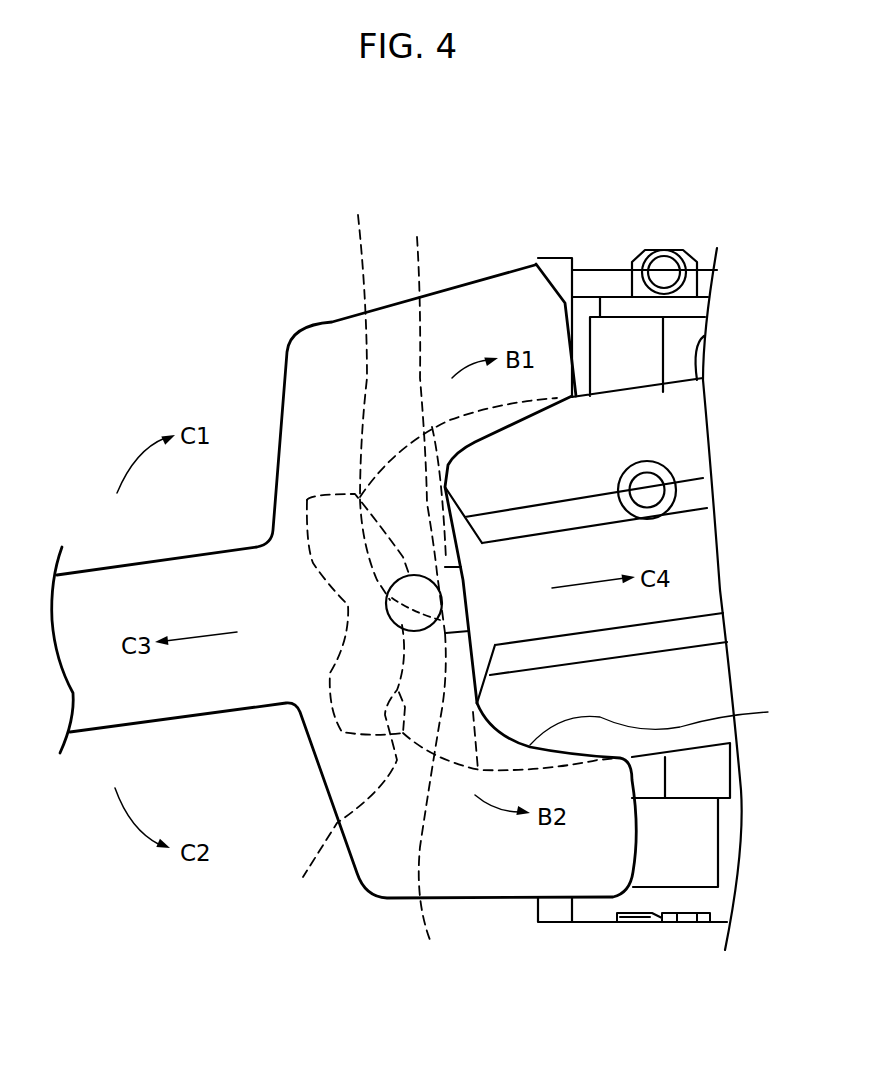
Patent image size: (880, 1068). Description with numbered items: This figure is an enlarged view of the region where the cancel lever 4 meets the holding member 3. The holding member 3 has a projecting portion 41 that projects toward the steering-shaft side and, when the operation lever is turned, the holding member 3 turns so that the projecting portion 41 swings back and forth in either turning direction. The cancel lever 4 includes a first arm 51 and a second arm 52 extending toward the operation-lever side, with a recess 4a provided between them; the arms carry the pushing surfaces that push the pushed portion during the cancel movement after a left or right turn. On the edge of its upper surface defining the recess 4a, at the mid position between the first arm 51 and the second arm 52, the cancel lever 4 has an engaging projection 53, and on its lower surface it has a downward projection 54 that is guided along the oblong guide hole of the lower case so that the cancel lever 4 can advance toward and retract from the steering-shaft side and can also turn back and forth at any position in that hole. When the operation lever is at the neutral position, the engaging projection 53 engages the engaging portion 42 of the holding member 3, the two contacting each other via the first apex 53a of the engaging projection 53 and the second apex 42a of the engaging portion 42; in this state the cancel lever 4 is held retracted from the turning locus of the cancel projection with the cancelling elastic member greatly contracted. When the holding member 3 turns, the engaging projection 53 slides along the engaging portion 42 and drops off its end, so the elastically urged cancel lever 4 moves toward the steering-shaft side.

The cancel lever 4 is at (344, 610).
The recess 4a is at (664, 724).
The holding member 3 is at (593, 560).
The projecting portion 41 is at (624, 368).
The engaging portion 42 is at (454, 700).
The second apex 42a is at (439, 804).
The first arm 51 is at (510, 868).
The second arm 52 is at (473, 307).
The engaging projection 53 is at (458, 424).
The first apex 53a is at (364, 395).
The downward projection 54 is at (400, 628).